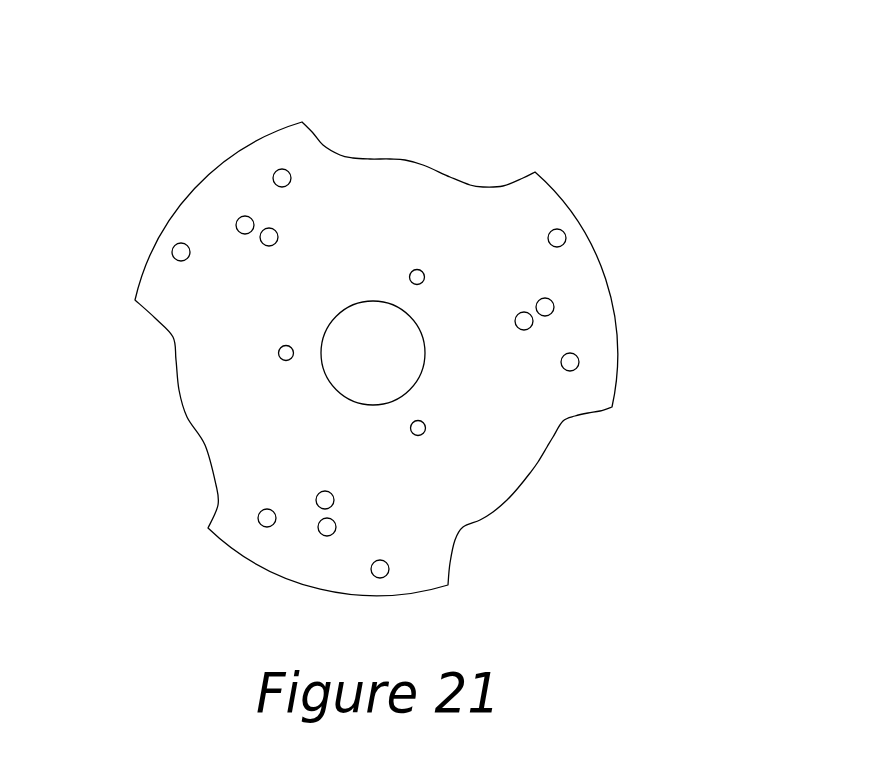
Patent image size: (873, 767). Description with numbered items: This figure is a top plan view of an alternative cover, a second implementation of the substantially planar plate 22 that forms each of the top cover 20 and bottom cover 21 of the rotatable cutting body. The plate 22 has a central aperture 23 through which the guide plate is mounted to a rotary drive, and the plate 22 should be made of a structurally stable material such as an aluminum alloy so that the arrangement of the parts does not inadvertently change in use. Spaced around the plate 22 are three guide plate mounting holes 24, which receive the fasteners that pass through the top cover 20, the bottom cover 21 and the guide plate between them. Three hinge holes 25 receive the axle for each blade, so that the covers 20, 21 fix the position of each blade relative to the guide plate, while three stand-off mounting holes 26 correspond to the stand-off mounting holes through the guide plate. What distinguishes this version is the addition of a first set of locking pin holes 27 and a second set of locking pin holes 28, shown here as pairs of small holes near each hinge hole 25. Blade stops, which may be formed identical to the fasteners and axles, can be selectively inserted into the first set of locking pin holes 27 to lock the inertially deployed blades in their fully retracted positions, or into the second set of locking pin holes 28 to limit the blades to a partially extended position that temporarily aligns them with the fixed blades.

The top cover 20 is at (517, 69).
The bottom cover 21 is at (517, 69).
The planar plate 22 is at (198, 411).
The central aperture 23 is at (357, 337).
The guide plate mounting holes 24 is at (176, 254).
The hinge holes 25 is at (281, 173).
The stand-off mounting holes 26 is at (416, 270).
The first set of locking pin holes 27 is at (239, 222).
The second set of locking pin holes 28 is at (277, 236).